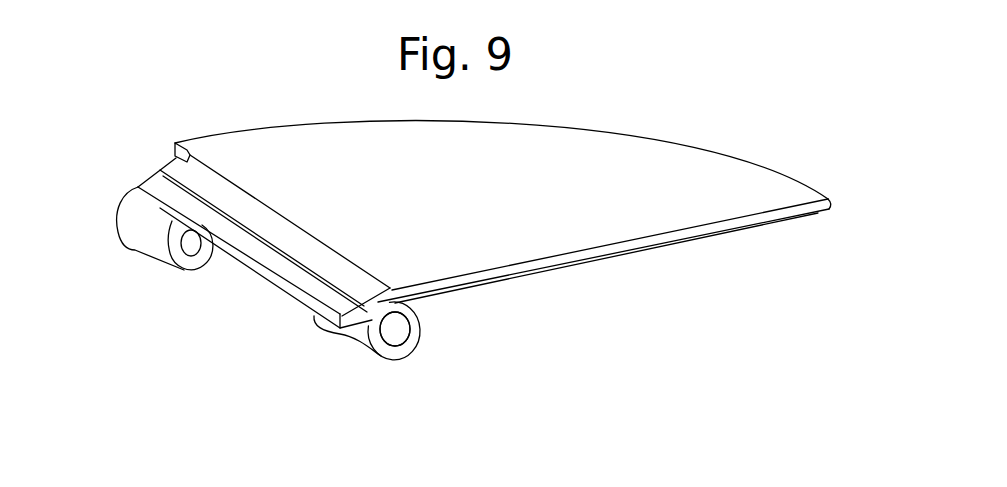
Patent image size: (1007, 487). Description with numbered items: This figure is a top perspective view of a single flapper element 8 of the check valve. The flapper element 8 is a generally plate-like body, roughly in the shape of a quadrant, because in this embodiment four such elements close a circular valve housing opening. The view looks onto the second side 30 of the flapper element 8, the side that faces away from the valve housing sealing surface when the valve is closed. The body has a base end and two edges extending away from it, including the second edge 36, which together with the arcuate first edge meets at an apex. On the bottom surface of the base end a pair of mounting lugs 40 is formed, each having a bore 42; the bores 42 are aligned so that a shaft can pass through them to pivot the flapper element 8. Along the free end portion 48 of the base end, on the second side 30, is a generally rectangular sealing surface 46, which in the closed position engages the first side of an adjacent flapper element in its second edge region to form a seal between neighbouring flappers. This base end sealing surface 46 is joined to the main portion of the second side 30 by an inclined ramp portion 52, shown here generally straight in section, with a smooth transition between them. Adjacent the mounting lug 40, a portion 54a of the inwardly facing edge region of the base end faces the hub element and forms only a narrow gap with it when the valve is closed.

The flapper element 8 is at (627, 332).
The second side 30 is at (733, 173).
The second edge 36 is at (750, 223).
The mounting lug 40 is at (135, 228).
The bore 42 is at (188, 250).
The sealing surface 46 is at (158, 188).
The free end portion 48 is at (260, 287).
The ramp portion 52 is at (200, 176).
The portion of the inwardly facing edge region 54a is at (388, 327).